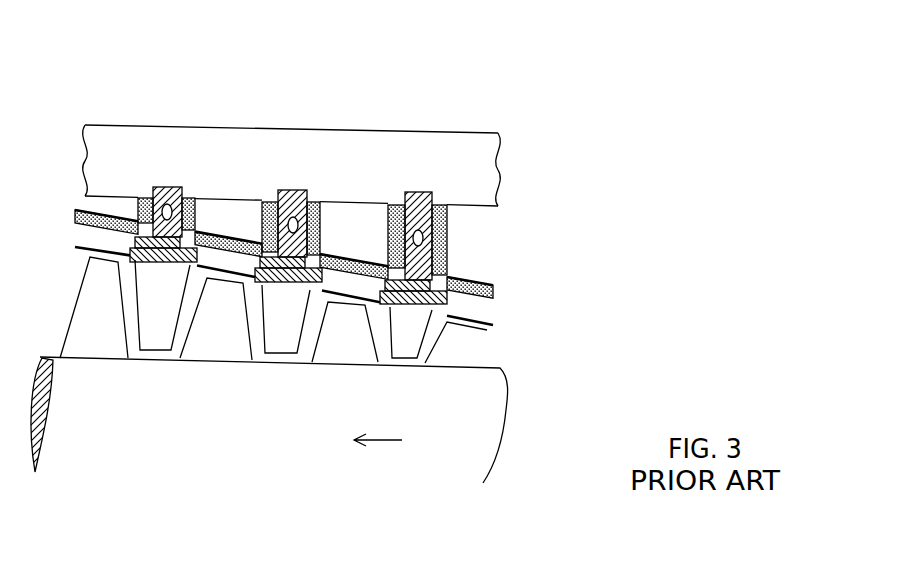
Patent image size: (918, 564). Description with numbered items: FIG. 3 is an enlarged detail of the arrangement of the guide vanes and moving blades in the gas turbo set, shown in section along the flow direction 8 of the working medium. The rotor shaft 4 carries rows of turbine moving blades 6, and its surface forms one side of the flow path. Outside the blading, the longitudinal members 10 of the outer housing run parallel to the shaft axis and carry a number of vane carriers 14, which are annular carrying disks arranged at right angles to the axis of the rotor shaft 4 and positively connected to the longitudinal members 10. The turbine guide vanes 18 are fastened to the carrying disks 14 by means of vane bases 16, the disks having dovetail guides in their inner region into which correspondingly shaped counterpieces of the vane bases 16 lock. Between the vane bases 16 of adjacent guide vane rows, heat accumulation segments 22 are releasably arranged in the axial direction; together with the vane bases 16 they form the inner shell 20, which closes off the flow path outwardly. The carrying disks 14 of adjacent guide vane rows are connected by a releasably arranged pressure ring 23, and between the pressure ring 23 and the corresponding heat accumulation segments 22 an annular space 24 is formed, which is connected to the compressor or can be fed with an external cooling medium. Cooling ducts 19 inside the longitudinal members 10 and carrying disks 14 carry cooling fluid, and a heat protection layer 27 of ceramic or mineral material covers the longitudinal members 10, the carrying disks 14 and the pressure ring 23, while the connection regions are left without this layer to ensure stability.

The rotor shaft 4 is at (127, 428).
The turbine moving blades 6 is at (208, 337).
The flow direction 8 is at (382, 442).
The longitudinal members 10 is at (462, 157).
The vane carriers 14 is at (437, 194).
The vane bases 16 is at (193, 187).
The turbine guide vanes 18 is at (290, 338).
The cooling ducts 19 is at (447, 245).
The inner shell 20 is at (272, 39).
The heat accumulation segments 22 is at (244, 238).
The pressure ring 23 is at (347, 250).
The annular space 24 is at (104, 240).
The heat protection layer 27 is at (447, 225).